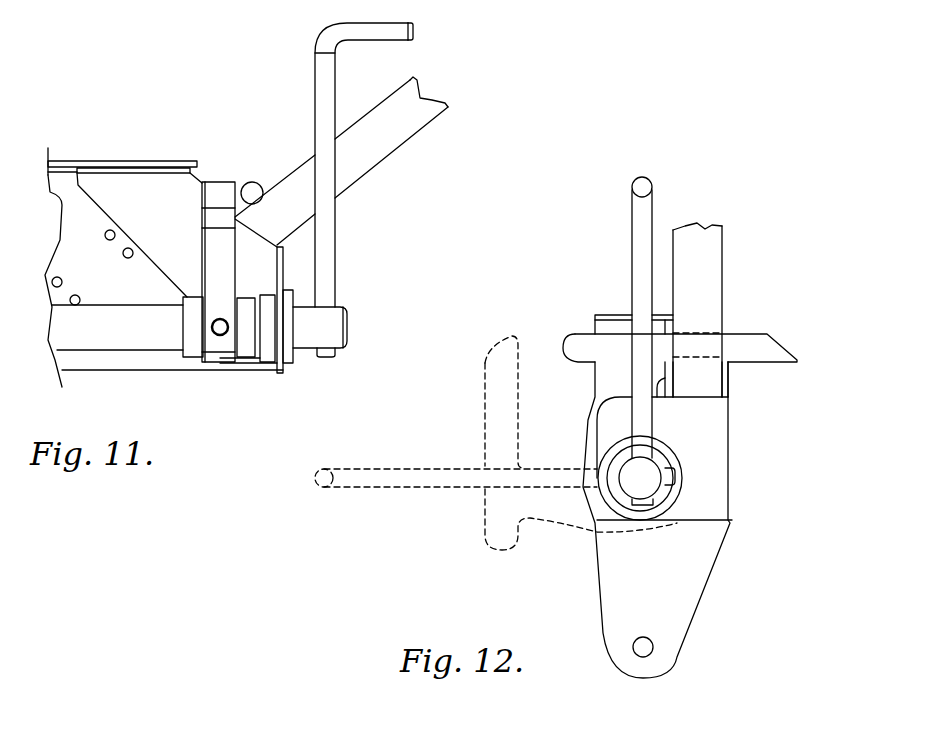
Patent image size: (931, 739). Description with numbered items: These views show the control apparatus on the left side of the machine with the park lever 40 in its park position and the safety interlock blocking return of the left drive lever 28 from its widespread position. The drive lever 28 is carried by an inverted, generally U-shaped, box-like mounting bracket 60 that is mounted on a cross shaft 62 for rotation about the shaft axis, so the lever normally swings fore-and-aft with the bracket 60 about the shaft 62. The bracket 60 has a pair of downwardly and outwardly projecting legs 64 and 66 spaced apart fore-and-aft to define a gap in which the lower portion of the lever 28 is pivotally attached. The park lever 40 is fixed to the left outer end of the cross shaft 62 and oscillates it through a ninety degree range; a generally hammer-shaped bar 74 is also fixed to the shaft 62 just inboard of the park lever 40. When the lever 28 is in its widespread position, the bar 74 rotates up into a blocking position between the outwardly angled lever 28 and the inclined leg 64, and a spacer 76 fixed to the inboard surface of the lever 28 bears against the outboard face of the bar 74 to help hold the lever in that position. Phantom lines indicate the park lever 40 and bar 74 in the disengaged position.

In FIG. 11, the drive lever 28 is at (387, 133).
In FIG. 12, the drive lever 28 is at (713, 245).
In FIG. 11, the park lever 40 is at (320, 70).
In FIG. 12, the park lever 40 is at (648, 198).
In FIG. 11, the mounting bracket 60 is at (115, 160).
In FIG. 12, the mounting bracket 60 is at (732, 448).
In FIG. 11, the cross shaft 62 is at (108, 342).
In FIG. 12, the cross shaft 62 is at (657, 480).
In FIG. 11, the leg 64 is at (167, 253).
In FIG. 12, the leg 64 is at (657, 397).
In FIG. 12, the leg 66 is at (727, 373).
In FIG. 11, the hammer-shaped bar 74 is at (223, 190).
In FIG. 12, the hammer-shaped bar 74 is at (747, 345).
In FIG. 11, the spacer 76 is at (253, 187).